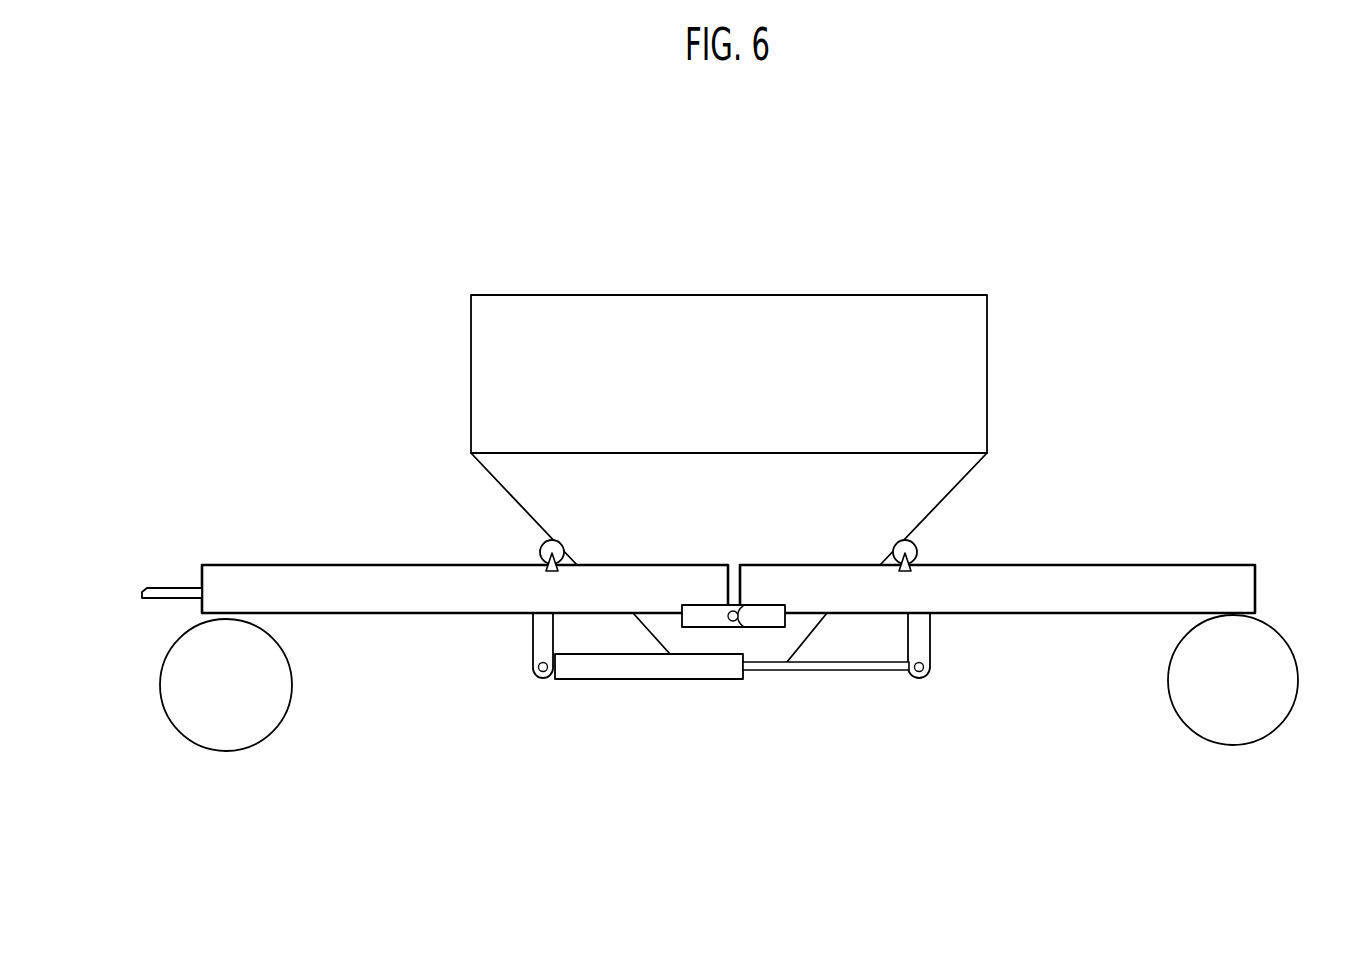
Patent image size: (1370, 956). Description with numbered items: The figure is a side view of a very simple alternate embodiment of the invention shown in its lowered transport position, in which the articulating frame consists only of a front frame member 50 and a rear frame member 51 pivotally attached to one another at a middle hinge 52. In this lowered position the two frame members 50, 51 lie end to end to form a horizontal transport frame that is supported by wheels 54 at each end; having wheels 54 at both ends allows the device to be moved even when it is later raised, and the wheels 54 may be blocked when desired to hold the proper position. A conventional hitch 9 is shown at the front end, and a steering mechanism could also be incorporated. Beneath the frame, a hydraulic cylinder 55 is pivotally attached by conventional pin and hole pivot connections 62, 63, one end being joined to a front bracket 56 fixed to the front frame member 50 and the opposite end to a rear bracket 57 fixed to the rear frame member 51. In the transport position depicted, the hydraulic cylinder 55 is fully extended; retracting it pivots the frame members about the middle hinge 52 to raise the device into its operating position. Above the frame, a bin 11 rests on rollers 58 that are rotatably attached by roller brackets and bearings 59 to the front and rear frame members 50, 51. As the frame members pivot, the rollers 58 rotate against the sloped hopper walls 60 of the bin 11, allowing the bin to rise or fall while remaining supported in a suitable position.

The hitch 9 is at (142, 597).
The bin 11 is at (827, 355).
The front frame member 50 is at (368, 614).
The rear frame member 51 is at (1085, 613).
The middle hinge 52 is at (736, 620).
The wheels 54 is at (227, 751).
The hydraulic cylinder 55 is at (632, 679).
The front bracket 56 is at (533, 640).
The rear bracket 57 is at (931, 638).
The rollers 58 is at (913, 541).
The roller brackets and bearings 59 is at (907, 568).
The sloped hopper walls 60 is at (967, 475).
The pin and hole pivot connection 62 is at (543, 679).
The pin and hole pivot connection 63 is at (925, 678).